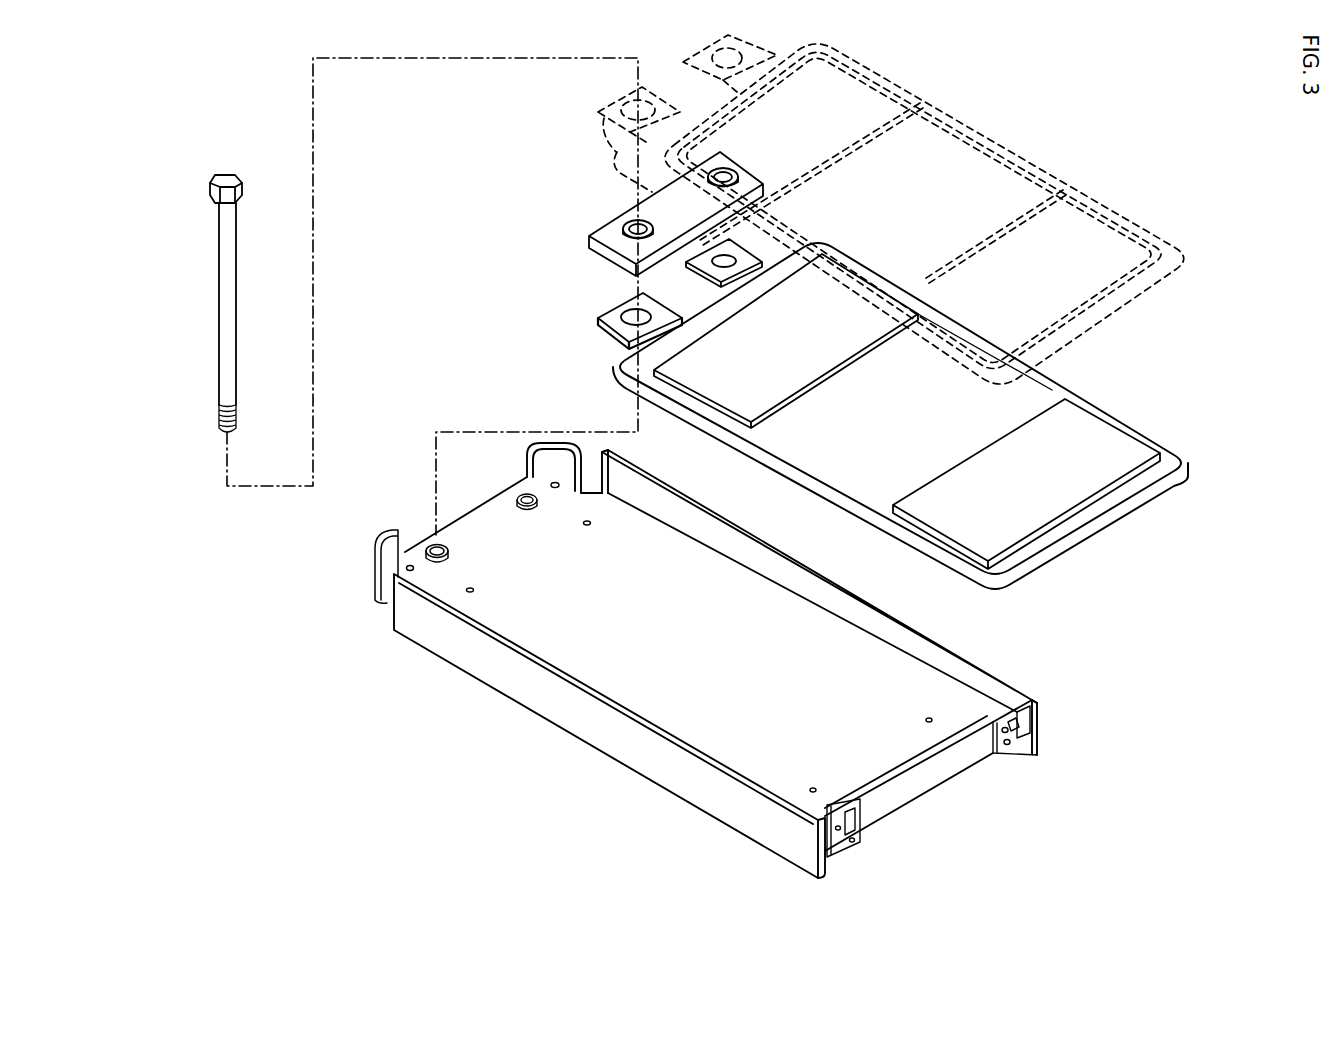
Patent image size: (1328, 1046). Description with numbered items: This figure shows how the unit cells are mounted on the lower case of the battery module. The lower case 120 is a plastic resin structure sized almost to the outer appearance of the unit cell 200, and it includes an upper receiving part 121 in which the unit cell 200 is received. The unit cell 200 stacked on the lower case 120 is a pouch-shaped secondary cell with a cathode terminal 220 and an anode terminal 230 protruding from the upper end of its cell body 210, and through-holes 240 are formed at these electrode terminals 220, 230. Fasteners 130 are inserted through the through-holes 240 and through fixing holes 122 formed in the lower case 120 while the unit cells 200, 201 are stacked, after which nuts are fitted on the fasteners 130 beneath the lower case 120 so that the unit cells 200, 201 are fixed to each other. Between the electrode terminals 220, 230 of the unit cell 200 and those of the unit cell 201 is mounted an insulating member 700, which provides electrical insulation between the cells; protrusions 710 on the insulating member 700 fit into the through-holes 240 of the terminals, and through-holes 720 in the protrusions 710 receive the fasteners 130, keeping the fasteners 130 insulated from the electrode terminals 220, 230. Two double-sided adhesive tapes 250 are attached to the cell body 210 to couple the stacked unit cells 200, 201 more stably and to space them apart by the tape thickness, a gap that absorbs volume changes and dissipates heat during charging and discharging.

The lower case 120 is at (667, 660).
The upper receiving part 121 is at (880, 748).
The fixing holes 122 is at (426, 551).
The fasteners 130 is at (220, 283).
The unit cell 200 is at (926, 458).
The unit cell 201 is at (1050, 148).
The cell body 210 is at (850, 505).
The cathode terminal 220 is at (552, 337).
The anode terminal 230 is at (752, 268).
The through-holes 240 is at (612, 328).
The double-sided adhesive tapes 250 is at (737, 398).
The insulating member 700 is at (594, 192).
The protrusions 710 is at (630, 222).
The through-holes 720 is at (556, 174).